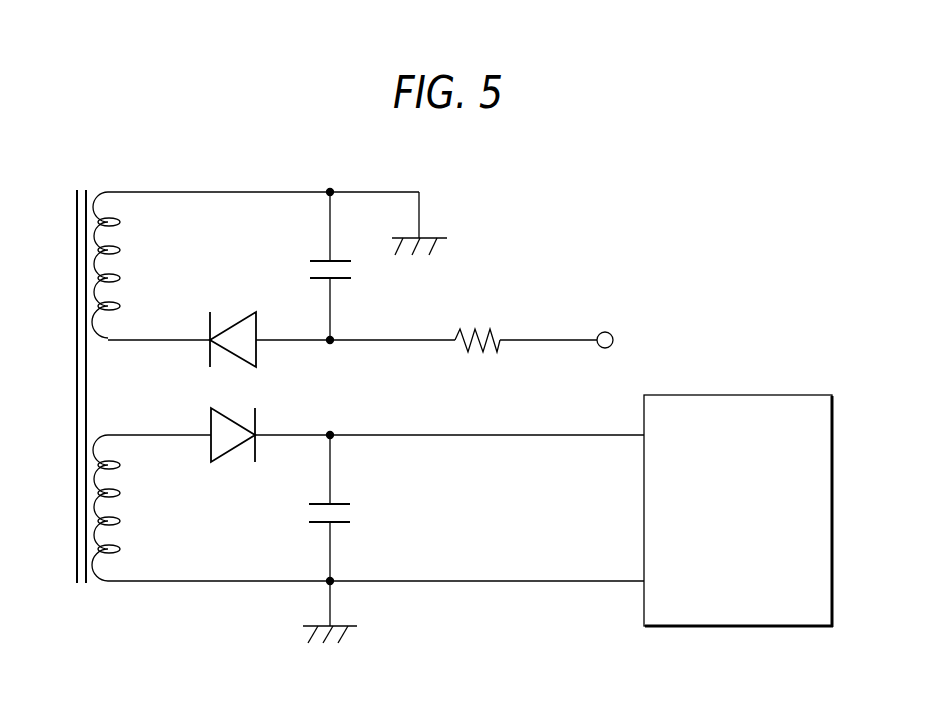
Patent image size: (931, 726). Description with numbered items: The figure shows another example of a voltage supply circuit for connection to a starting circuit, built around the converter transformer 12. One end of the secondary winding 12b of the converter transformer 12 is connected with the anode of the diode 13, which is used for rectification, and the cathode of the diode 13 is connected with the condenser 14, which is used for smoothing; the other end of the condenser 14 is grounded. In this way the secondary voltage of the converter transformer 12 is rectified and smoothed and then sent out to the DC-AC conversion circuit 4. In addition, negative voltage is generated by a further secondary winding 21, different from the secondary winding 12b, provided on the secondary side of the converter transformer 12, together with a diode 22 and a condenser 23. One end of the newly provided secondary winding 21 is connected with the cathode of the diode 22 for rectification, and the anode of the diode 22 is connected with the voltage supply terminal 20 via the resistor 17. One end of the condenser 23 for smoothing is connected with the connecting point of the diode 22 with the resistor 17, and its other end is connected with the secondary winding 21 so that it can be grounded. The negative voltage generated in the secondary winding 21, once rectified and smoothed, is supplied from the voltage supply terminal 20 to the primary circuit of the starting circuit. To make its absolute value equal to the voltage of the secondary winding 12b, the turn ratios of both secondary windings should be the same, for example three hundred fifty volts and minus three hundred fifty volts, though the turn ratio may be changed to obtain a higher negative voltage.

The DC-AC conversion circuit 4 is at (738, 395).
The converter transformer 12 is at (91, 603).
The secondary winding 12b is at (107, 433).
The diode 13 is at (219, 417).
The condenser 14 is at (322, 503).
The resistor 17 is at (474, 330).
The voltage supply terminal 20 is at (611, 333).
The secondary winding 21 is at (98, 195).
The diode 22 is at (245, 318).
The condenser 23 is at (318, 260).